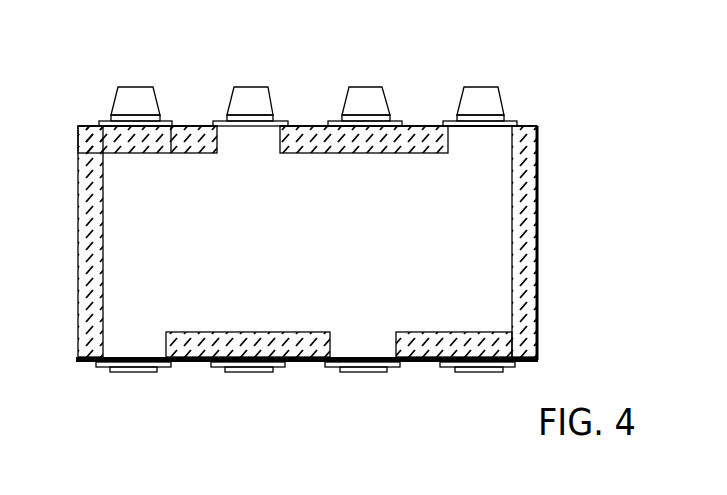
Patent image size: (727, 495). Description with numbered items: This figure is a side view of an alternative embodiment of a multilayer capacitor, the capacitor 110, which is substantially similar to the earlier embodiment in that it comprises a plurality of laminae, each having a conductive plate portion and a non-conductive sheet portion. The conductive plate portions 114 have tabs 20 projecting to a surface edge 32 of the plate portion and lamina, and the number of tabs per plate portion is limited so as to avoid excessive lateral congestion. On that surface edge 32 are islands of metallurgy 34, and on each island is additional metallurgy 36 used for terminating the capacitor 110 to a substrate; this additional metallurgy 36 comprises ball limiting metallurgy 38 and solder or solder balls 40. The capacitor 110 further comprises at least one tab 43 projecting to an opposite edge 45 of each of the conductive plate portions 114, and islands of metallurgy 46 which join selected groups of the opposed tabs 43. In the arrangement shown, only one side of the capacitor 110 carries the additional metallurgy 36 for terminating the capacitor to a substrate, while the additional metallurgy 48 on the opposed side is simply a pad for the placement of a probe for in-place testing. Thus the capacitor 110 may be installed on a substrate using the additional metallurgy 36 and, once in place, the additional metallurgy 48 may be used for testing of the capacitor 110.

The capacitor 110 is at (81, 104).
The surface edge 32 is at (532, 118).
The tab 20 is at (268, 138).
The island of metallurgy 34 is at (448, 125).
The additional metallurgy 36 is at (331, 93).
The ball limiting metallurgy 38 is at (388, 115).
The solder ball 40 is at (360, 100).
The tab 43 is at (138, 347).
The conductive plate portion 114 is at (187, 264).
The opposite edge 45 is at (88, 384).
The island of metallurgy 46 is at (340, 372).
The additional metallurgy 48 is at (358, 372).